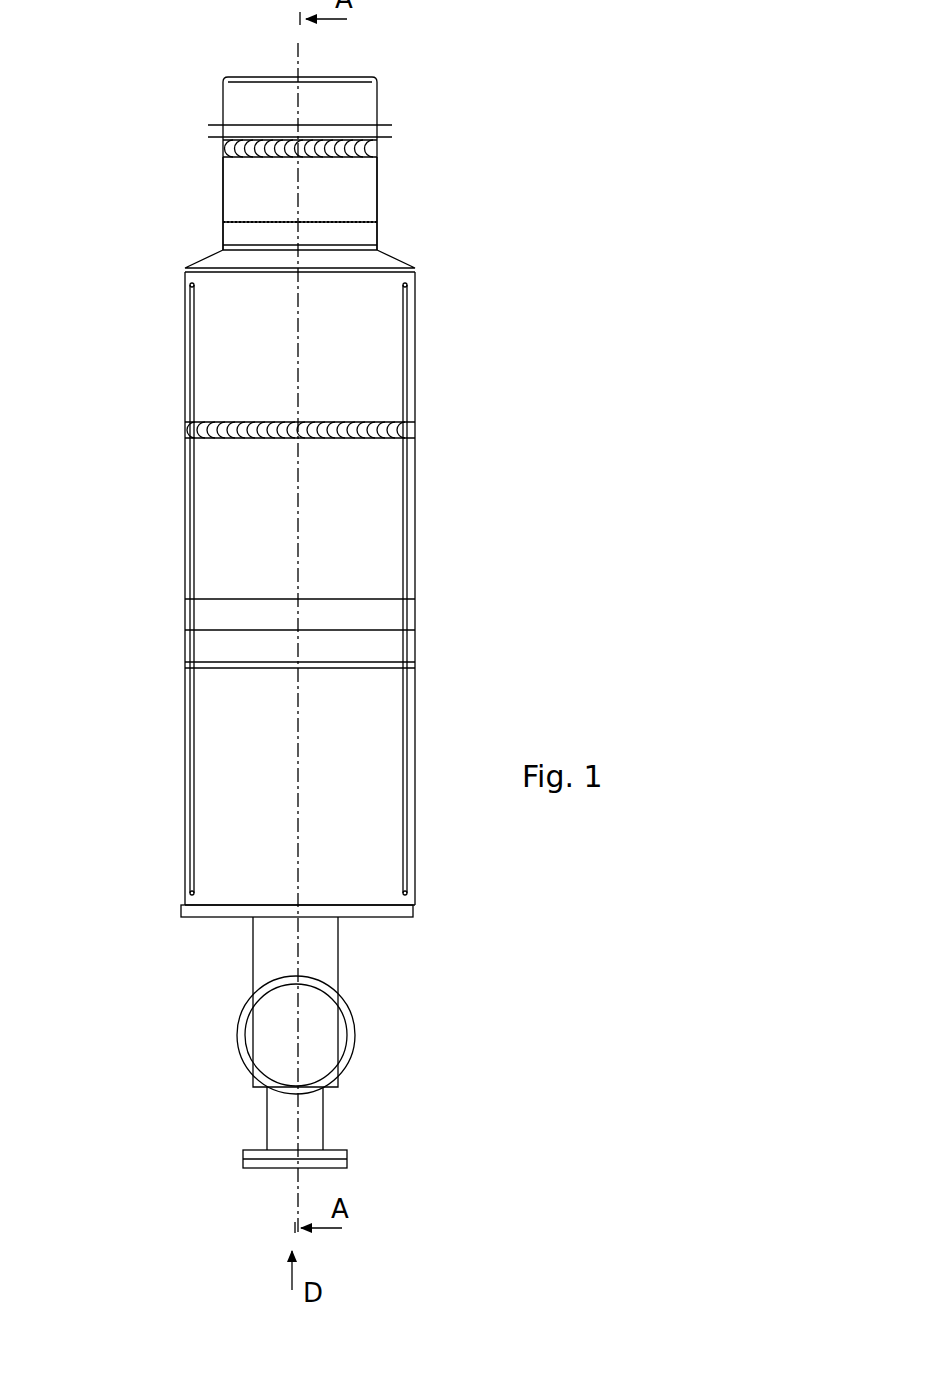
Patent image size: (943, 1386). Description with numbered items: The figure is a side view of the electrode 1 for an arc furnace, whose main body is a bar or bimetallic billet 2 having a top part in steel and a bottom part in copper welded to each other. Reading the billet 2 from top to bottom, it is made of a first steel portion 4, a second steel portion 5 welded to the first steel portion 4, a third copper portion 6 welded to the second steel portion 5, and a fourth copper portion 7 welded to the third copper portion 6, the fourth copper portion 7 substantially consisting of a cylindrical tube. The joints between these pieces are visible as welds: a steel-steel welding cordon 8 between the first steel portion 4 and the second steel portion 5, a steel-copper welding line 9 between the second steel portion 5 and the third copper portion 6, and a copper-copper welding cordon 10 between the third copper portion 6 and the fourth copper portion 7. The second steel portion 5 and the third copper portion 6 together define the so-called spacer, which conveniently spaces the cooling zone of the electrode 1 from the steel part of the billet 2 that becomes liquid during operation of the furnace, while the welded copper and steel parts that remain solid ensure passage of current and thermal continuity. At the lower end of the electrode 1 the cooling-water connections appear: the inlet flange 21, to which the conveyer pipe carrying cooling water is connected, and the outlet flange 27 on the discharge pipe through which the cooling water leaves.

The electrode 1 is at (514, 342).
The bimetallic billet 2 is at (214, 90).
The first steel portion 4 is at (350, 100).
The second steel portion 5 is at (243, 193).
The third copper portion 6 is at (227, 332).
The fourth copper portion 7 is at (207, 555).
The steel-steel welding cordon 8 is at (380, 148).
The steel-copper welding line 9 is at (355, 222).
The copper-copper welding cordon 10 is at (405, 430).
The inlet flange 21 is at (253, 1153).
The outlet flange 27 is at (335, 1050).